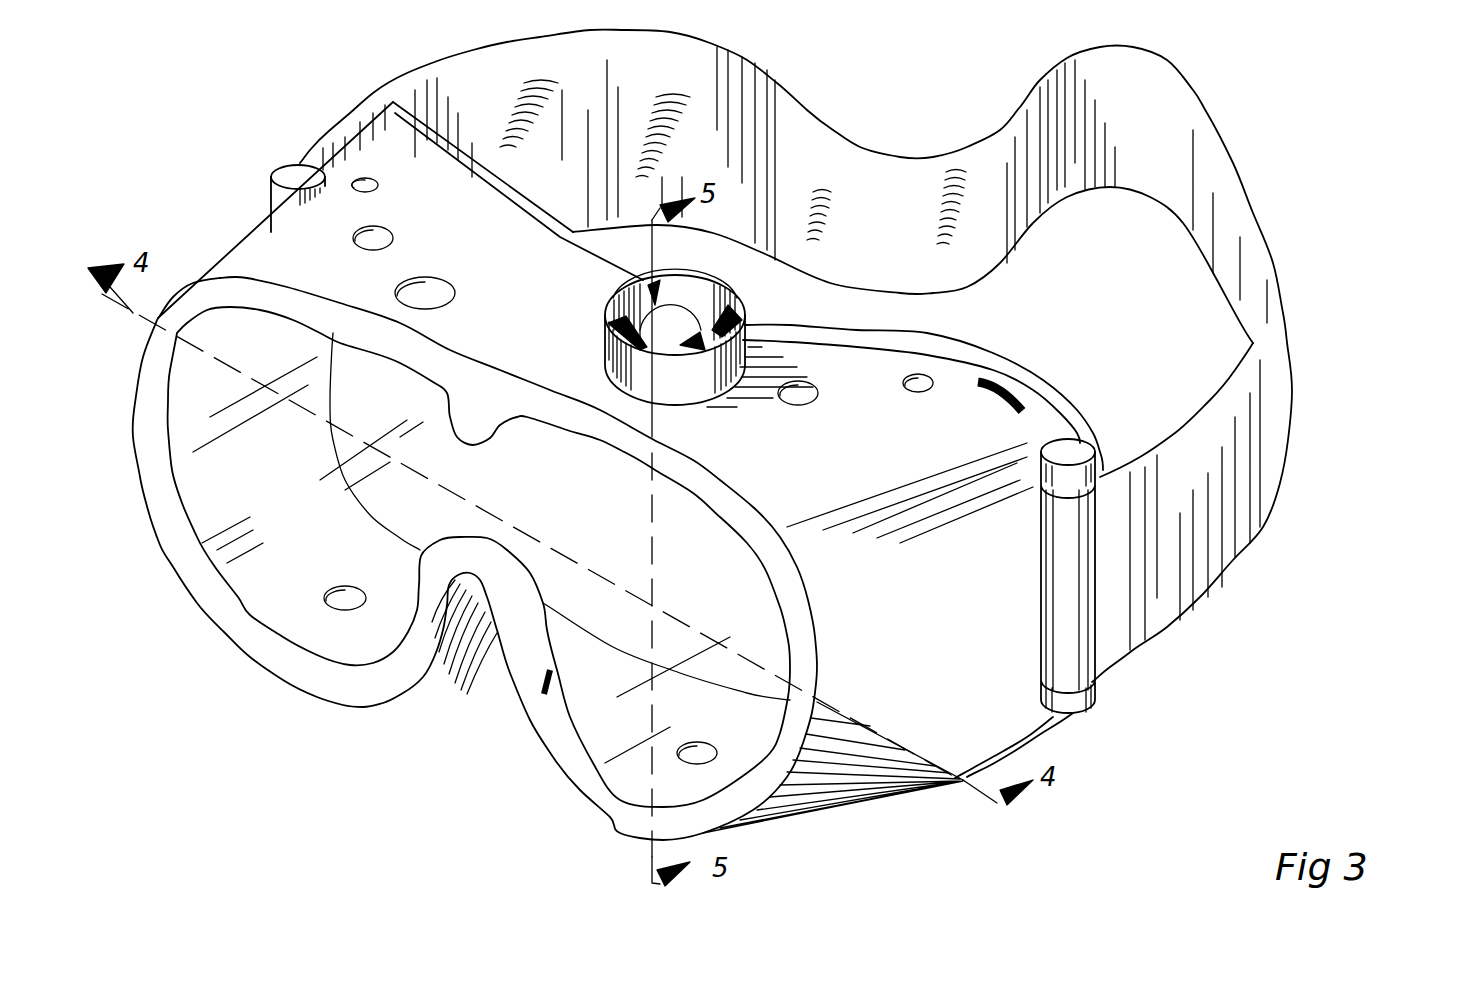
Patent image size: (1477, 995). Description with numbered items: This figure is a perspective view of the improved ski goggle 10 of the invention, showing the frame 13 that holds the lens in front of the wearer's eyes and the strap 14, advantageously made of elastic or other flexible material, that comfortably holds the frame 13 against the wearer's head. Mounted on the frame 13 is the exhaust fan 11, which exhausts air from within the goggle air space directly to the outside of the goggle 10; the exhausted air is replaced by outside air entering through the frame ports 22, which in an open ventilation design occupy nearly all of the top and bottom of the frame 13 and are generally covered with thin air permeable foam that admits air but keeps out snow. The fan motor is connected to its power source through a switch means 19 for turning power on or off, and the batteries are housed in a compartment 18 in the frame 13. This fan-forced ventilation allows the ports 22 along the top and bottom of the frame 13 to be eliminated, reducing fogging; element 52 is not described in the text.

The goggle 10 is at (937, 840).
The exhaust fan 11 is at (675, 337).
The frame 13 is at (678, 471).
The strap 14 is at (1283, 388).
The compartment 18 is at (1075, 655).
The switch means 19 is at (1020, 397).
The frame ports 22 is at (347, 183).
The stop rib 52 is at (537, 710).